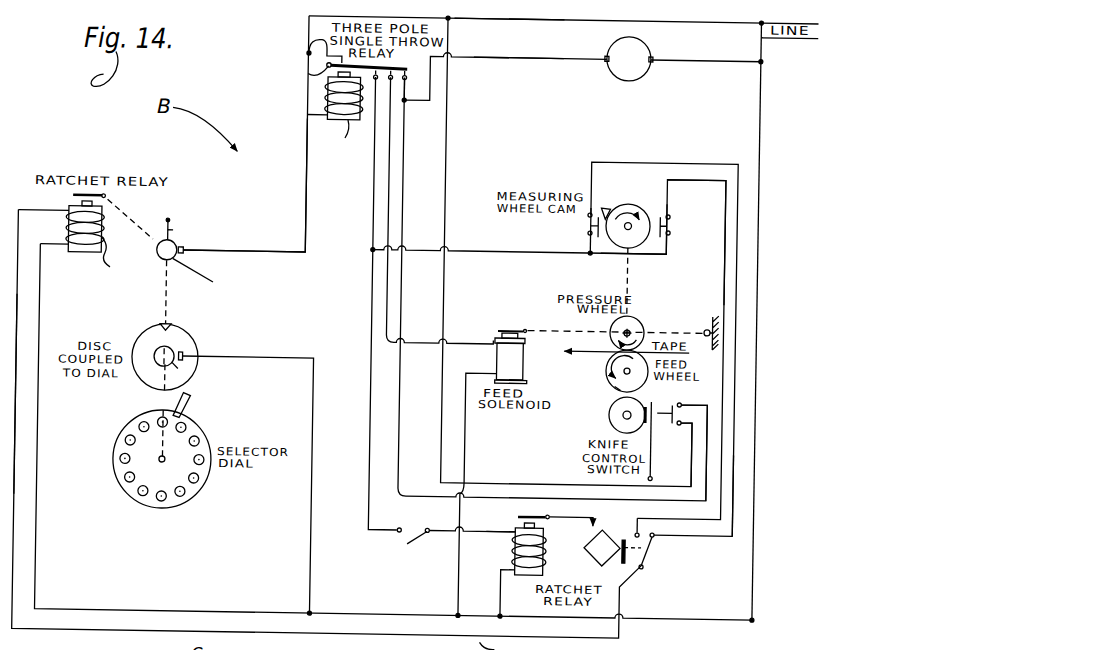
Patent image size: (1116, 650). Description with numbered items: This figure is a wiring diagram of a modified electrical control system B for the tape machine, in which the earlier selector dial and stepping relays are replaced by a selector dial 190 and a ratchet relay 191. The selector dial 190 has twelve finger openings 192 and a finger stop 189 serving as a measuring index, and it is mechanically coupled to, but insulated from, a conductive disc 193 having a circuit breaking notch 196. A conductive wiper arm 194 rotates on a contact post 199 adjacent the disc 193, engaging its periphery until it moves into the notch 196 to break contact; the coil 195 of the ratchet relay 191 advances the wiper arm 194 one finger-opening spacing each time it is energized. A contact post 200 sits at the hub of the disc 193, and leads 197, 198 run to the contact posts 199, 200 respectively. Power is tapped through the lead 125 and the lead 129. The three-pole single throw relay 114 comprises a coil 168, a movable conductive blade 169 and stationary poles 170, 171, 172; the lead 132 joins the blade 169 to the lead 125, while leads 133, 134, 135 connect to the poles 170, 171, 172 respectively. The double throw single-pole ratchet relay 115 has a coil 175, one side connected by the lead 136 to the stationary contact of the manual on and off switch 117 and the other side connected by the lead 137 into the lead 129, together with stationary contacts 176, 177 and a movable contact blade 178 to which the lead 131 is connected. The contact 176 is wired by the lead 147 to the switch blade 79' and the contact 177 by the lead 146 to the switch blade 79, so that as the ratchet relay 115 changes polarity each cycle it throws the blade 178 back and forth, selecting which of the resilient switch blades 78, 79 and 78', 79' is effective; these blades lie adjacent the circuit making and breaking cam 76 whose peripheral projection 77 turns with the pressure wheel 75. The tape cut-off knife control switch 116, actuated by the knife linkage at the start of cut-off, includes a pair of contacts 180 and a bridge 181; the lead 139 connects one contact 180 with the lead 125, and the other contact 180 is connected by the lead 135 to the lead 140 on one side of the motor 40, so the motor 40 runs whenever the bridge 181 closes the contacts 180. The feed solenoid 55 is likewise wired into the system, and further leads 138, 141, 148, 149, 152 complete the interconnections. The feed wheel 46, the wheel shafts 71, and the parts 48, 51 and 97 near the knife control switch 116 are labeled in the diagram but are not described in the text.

The motor 40 is at (638, 45).
The feed wheel 46 is at (628, 367).
The feed wheel shaft 48 is at (612, 392).
The knife control switch cam 51 is at (625, 411).
The feed solenoid 55 is at (514, 363).
The wheel shaft 71 is at (626, 224).
The pressure wheel 75 is at (632, 323).
The circuit making and breaking cam 76 is at (649, 206).
The cam projection 77 is at (606, 207).
The switch blade 78 is at (559, 230).
The switch blade 78' is at (687, 251).
The switch blade 79 is at (575, 224).
The switch blade 79' is at (686, 226).
The knife control switch pivot 97 is at (651, 473).
The three-pole single throw relay 114 is at (312, 97).
The double throw single-pole ratchet relay 115 is at (652, 559).
The tape cut-off knife control switch 116 is at (662, 426).
The manual on and off switch 117 is at (411, 547).
The lead 125 is at (506, 19).
The lead 129 is at (758, 137).
The lead 131 is at (15, 459).
The lead 132 is at (305, 43).
The lead 133 is at (370, 498).
The lead 134 is at (419, 340).
The lead 135 is at (556, 499).
The lead 136 is at (506, 525).
The lead 137 is at (505, 590).
The lead 138 is at (467, 455).
The lead 139 is at (444, 164).
The lead 140 is at (505, 58).
The lead 141 is at (723, 58).
The lead 146 is at (721, 532).
The lead 147 is at (693, 175).
The lead 148 is at (587, 239).
The lead 149 is at (504, 253).
The lead 152 is at (649, 253).
The coil 168 is at (348, 141).
The movable conductive blade 169 is at (304, 75).
The pole 170 is at (388, 66).
The pole 171 is at (389, 80).
The pole 172 is at (403, 78).
The coil 175 is at (517, 550).
The stationary contact 176 is at (639, 531).
The stationary contact 177 is at (659, 530).
The movable contact blade 178 is at (652, 547).
The contacts 180 is at (685, 398).
The bridge 181 is at (669, 401).
The finger stop 189 is at (194, 410).
The selector dial 190 is at (197, 433).
The ratchet relay 191 is at (161, 214).
The finger openings 192 is at (164, 505).
The conductive disc 193 is at (186, 345).
The conductive wiper arm 194 is at (172, 234).
The coil 195 is at (120, 260).
The circuit breaking notch 196 is at (162, 327).
The lead 197 is at (304, 234).
The lead 198 is at (291, 360).
The contact post 199 is at (207, 277).
The contact post 200 is at (188, 370).